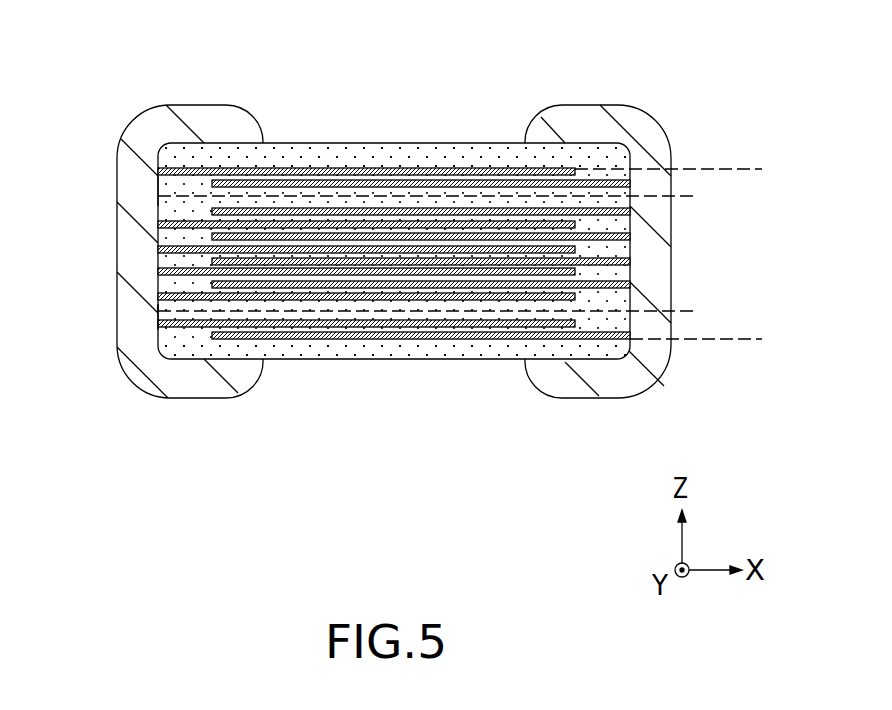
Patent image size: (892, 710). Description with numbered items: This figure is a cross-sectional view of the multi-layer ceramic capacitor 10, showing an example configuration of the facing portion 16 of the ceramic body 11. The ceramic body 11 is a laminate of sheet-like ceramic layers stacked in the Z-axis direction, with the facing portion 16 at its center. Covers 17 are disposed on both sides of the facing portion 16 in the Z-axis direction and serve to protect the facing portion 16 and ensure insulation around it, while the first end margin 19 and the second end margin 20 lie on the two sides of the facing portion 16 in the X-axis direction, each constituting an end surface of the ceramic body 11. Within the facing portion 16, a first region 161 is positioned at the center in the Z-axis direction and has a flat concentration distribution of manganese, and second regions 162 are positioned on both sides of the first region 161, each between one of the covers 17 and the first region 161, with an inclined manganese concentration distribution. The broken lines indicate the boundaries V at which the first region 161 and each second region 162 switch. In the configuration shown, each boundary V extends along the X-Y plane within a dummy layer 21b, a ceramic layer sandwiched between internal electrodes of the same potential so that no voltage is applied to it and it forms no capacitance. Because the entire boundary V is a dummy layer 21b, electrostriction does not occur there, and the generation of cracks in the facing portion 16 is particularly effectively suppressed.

The multi-layer ceramic capacitor 10 is at (421, 242).
The ceramic body 11 is at (426, 210).
The facing portion 16 is at (479, 255).
The first region 161 is at (688, 196).
The second region 162 is at (688, 169).
The cover 17 is at (400, 158).
The first end margin 19 is at (183, 382).
The second end margin 20 is at (602, 384).
The dummy layer 21b is at (139, 186).
The boundary V is at (148, 203).